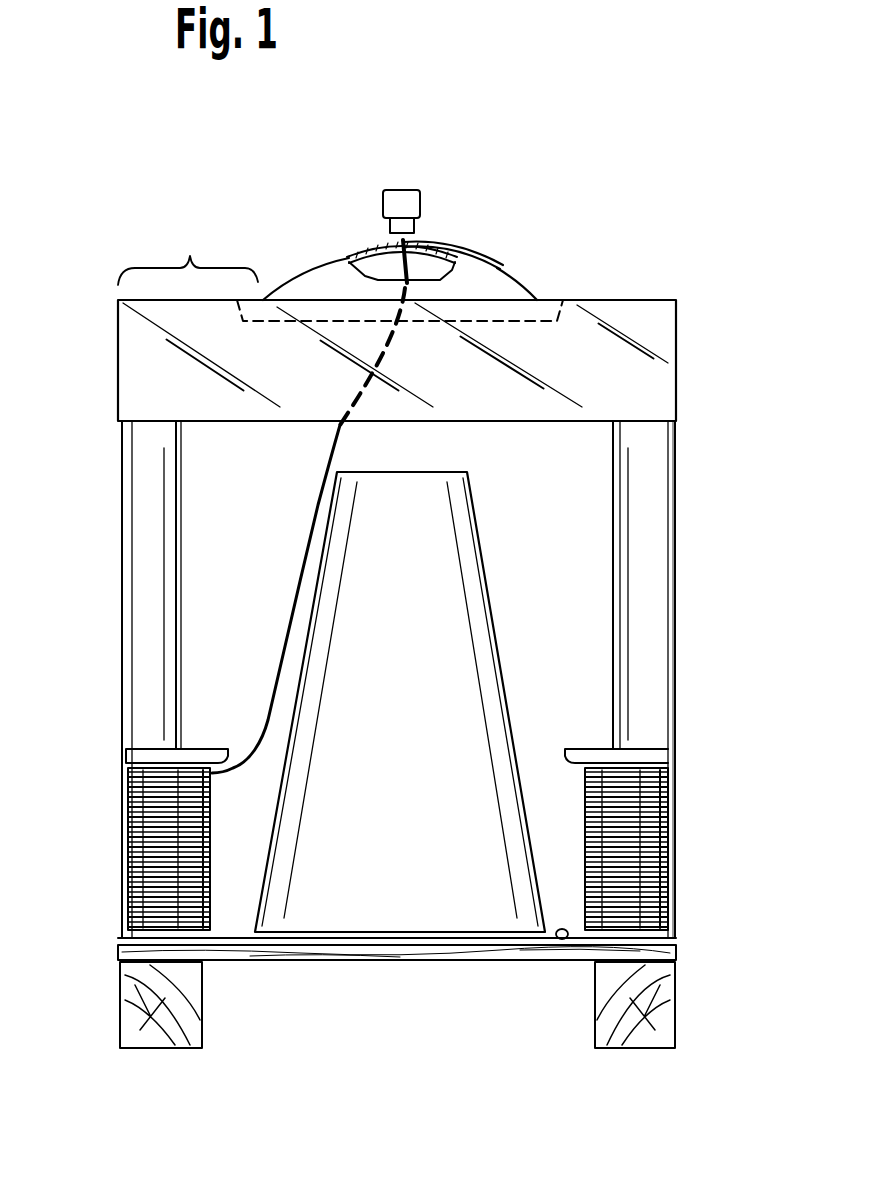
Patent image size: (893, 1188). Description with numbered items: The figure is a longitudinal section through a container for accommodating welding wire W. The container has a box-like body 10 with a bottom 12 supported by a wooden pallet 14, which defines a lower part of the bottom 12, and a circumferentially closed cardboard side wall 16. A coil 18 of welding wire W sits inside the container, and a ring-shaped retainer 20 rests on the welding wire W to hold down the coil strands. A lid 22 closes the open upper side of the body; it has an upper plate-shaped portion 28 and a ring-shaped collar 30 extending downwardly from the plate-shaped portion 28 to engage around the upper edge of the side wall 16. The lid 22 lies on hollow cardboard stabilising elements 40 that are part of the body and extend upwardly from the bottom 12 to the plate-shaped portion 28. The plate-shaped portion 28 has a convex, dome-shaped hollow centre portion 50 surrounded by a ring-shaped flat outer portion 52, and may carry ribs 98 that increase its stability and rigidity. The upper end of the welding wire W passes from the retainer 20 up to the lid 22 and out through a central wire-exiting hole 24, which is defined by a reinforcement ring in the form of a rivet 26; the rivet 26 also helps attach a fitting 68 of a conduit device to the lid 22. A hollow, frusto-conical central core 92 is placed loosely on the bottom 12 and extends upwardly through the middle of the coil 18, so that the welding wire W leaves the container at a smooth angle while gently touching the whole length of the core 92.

The box-like body 10 is at (705, 722).
The bottom 12 is at (566, 940).
The pallet 14 is at (673, 1005).
The side wall 16 is at (673, 610).
The coil 18 is at (655, 854).
The retainer 20 is at (147, 752).
The lid 22 is at (632, 312).
The wire-exiting hole 24 is at (462, 252).
The rivet 26 is at (394, 243).
The plate-shaped portion 28 is at (292, 268).
The ring-shaped collar 30 is at (118, 364).
The stabilising elements 40 is at (145, 512).
The centre portion 50 is at (500, 288).
The flat outer portion 52 is at (188, 247).
The fitting 68 is at (401, 190).
The central core 92 is at (410, 673).
The ribs 98 is at (557, 325).
The welding wire W is at (312, 510).